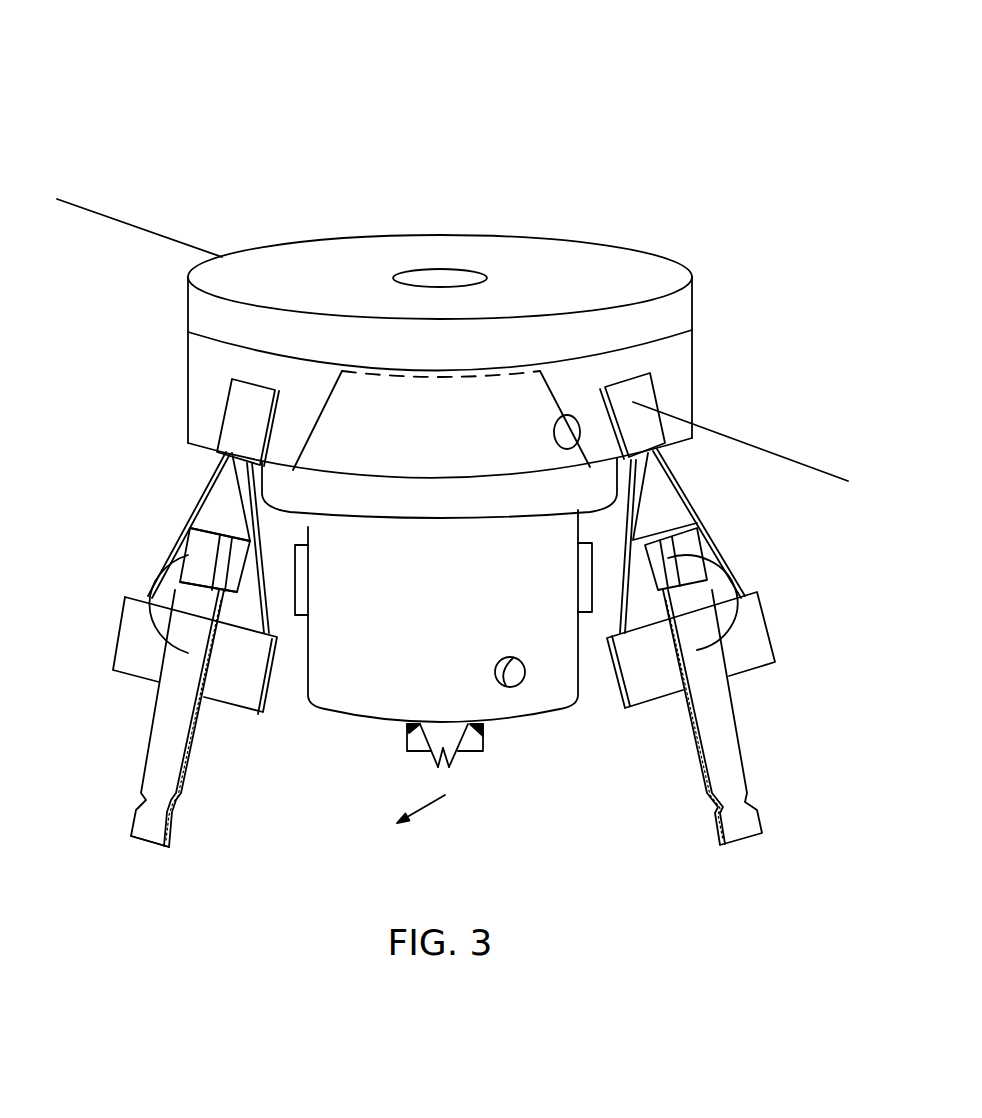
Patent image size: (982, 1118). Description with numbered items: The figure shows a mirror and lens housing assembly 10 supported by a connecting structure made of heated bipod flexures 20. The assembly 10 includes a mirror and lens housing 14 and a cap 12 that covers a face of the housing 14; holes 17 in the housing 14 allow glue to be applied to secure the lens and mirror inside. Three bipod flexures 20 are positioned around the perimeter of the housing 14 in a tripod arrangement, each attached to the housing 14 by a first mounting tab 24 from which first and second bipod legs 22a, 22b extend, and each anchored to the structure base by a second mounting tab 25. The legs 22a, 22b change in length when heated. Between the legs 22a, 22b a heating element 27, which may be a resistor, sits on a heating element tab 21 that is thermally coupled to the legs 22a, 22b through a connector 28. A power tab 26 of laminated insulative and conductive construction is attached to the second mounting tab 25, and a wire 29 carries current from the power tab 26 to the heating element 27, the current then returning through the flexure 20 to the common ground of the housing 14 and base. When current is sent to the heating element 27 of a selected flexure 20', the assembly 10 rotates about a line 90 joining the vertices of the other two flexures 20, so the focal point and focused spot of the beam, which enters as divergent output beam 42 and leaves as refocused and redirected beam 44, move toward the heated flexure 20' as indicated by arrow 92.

The mirror and lens housing assembly 10 is at (258, 63).
The cap 12 is at (245, 251).
The mirror and lens housing 14 is at (188, 372).
The holes 17 is at (553, 436).
The bipod flexure 20 is at (746, 717).
The heated bipod flexure 20' is at (145, 718).
The heating element tab 21 is at (232, 596).
The first bipod leg 22a is at (212, 476).
The second bipod leg 22b is at (262, 532).
The first mounting tab 24 is at (654, 391).
The second mounting tab 25 is at (264, 710).
The power tab 26 is at (130, 832).
The heating element 27 is at (207, 592).
The connector 28 is at (247, 544).
The wire 29 is at (141, 573).
The divergent output beam 42 is at (454, 765).
The refocused and redirected beam 44 is at (432, 762).
The line 90 is at (124, 219).
The arrow 92 is at (432, 806).